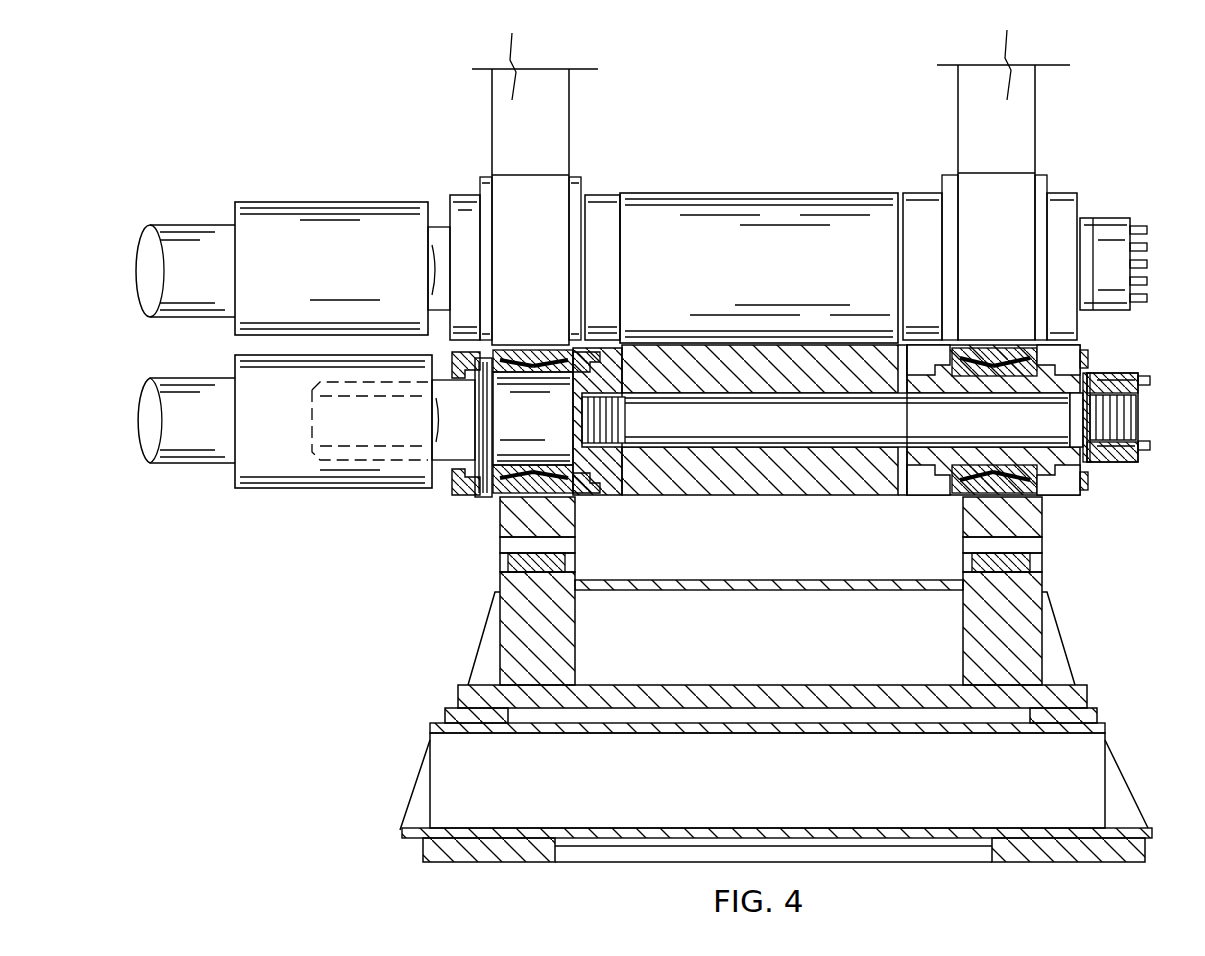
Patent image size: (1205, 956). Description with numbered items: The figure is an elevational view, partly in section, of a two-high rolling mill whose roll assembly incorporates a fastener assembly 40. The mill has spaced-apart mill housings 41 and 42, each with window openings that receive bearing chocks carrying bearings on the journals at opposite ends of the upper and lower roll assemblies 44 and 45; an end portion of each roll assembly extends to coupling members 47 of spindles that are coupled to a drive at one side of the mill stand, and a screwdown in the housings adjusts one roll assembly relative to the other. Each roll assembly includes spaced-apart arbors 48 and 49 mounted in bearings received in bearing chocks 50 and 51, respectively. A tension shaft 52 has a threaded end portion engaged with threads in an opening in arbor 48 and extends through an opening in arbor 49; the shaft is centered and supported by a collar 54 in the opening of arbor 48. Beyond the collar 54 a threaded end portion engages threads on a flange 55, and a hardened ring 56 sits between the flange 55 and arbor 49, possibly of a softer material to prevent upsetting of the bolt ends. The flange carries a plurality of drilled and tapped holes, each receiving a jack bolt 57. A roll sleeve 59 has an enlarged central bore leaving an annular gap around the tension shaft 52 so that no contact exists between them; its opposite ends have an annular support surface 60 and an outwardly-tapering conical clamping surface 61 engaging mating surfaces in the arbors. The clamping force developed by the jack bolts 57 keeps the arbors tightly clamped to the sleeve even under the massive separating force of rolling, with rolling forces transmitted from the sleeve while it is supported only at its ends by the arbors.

The fastener assembly 40 is at (1125, 212).
The mill housing 41 is at (492, 129).
The mill housing 42 is at (1036, 125).
The upper roll assembly 44 is at (464, 195).
The lower roll assembly 45 is at (453, 498).
The coupling member 47 is at (348, 281).
The arbor 48 is at (542, 428).
The arbor 49 is at (914, 470).
The bearing chock 50 is at (480, 495).
The bearing chock 51 is at (1068, 497).
The tension shaft 52 is at (812, 431).
The collar 54 is at (1069, 420).
The flange 55 is at (1136, 462).
The hardened ring 56 is at (1095, 372).
The jack bolt 57 is at (1150, 247).
The roll sleeve 59 is at (800, 496).
The annular support surface 60 is at (627, 458).
The conical clamping surface 61 is at (613, 496).